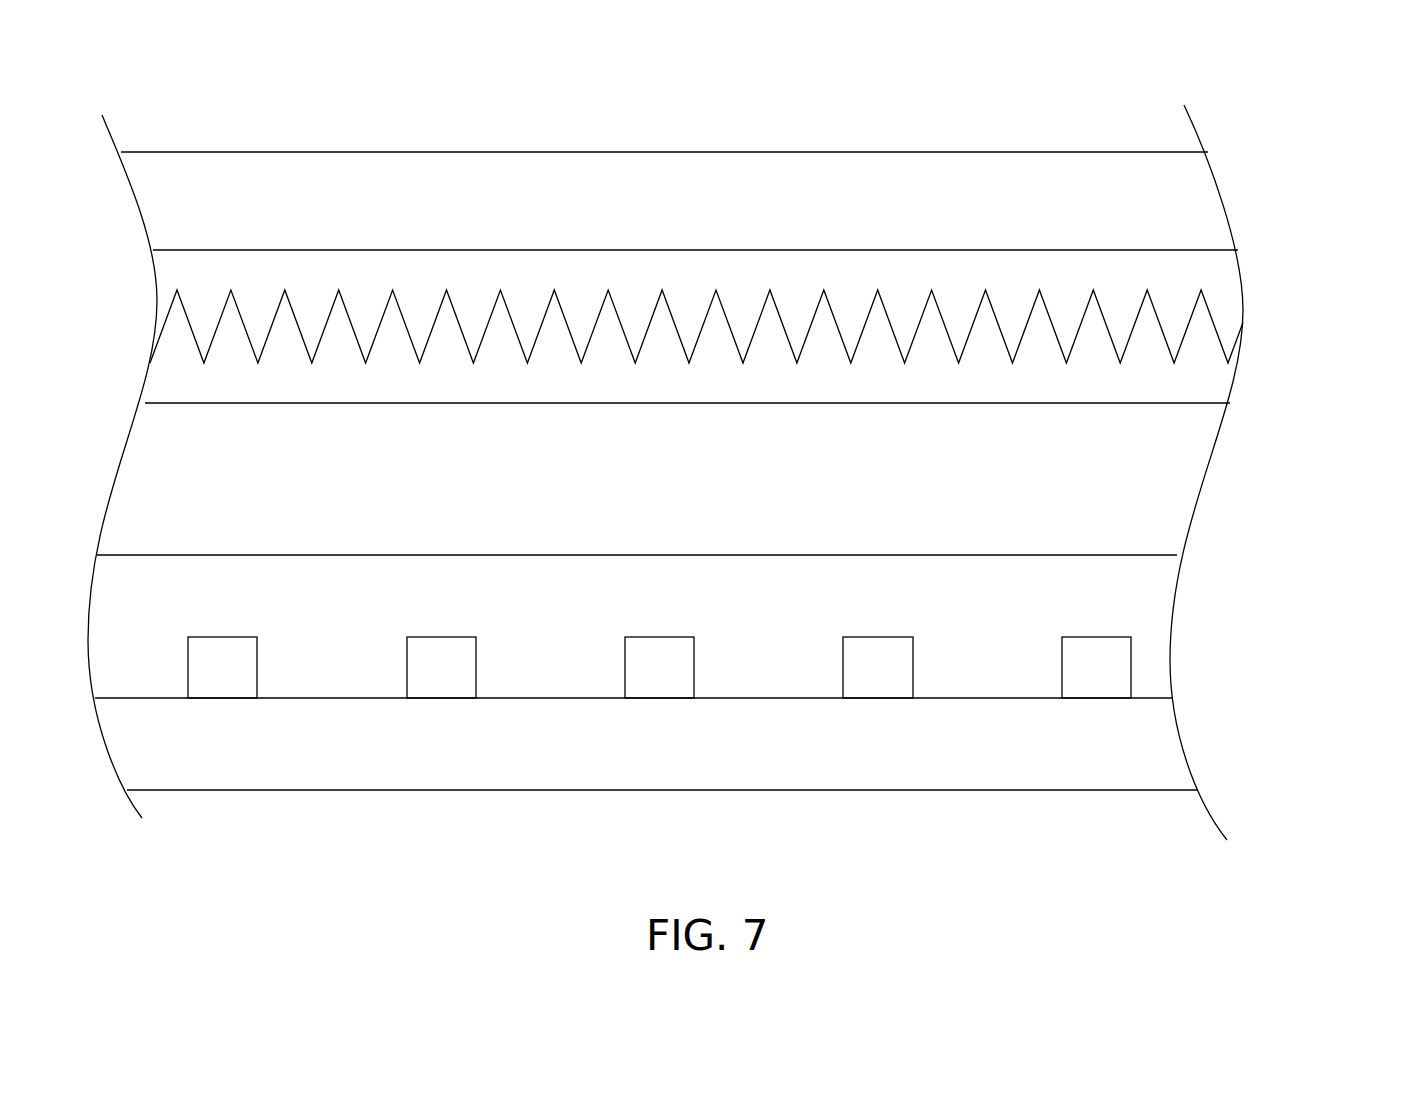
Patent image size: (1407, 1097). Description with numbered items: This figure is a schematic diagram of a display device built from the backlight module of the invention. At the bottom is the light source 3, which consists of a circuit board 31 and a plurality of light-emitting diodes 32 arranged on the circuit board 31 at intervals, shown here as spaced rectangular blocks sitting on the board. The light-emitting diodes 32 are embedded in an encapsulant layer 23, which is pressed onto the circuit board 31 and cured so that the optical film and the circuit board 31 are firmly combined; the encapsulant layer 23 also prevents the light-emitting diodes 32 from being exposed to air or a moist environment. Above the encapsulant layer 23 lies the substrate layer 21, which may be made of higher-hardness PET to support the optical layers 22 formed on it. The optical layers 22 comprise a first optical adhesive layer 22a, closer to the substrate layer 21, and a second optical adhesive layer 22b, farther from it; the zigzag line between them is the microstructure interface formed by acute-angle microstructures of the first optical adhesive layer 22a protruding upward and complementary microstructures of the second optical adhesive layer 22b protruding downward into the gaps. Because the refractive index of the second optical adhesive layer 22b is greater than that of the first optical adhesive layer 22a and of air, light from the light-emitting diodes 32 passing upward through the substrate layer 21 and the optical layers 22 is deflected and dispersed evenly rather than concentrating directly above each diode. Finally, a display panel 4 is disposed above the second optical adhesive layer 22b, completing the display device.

The display panel 4 is at (240, 167).
The optical layers 22 is at (770, 353).
The first optical adhesive layer 22a is at (770, 433).
The second optical adhesive layer 22b is at (773, 320).
The substrate layer 21 is at (1179, 495).
The encapsulant layer 23 is at (1155, 610).
The light source 3 is at (665, 775).
The circuit board 31 is at (292, 773).
The light-emitting diodes 32 is at (879, 693).